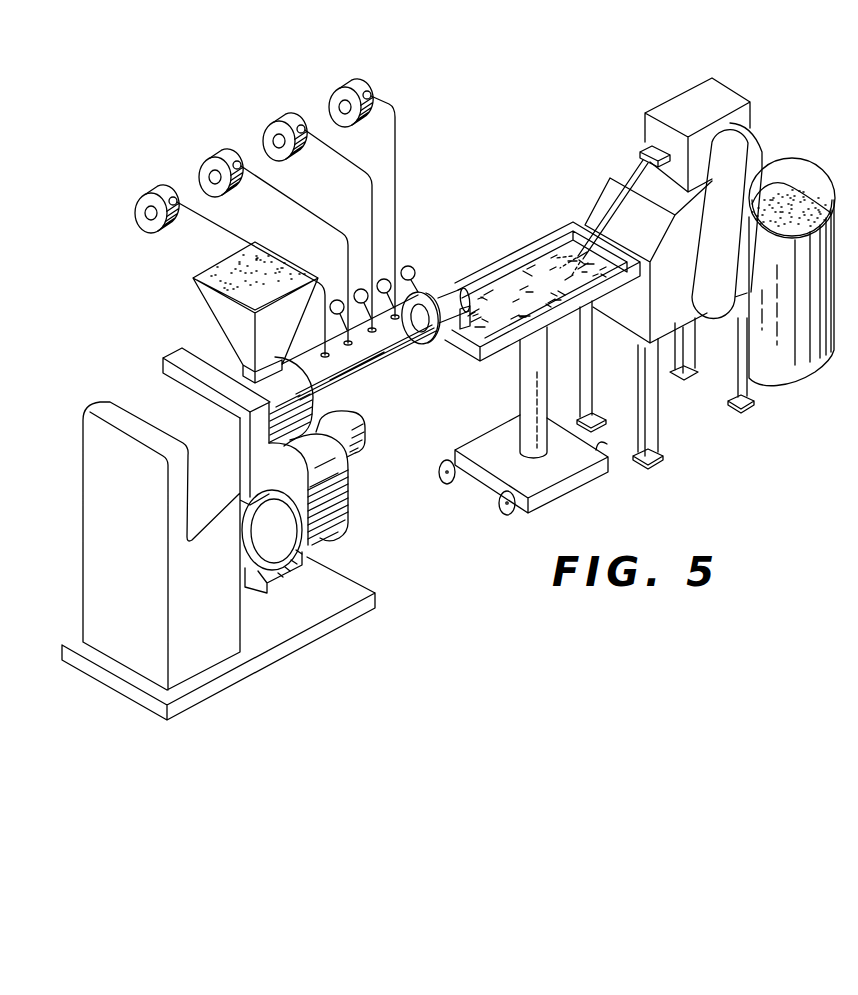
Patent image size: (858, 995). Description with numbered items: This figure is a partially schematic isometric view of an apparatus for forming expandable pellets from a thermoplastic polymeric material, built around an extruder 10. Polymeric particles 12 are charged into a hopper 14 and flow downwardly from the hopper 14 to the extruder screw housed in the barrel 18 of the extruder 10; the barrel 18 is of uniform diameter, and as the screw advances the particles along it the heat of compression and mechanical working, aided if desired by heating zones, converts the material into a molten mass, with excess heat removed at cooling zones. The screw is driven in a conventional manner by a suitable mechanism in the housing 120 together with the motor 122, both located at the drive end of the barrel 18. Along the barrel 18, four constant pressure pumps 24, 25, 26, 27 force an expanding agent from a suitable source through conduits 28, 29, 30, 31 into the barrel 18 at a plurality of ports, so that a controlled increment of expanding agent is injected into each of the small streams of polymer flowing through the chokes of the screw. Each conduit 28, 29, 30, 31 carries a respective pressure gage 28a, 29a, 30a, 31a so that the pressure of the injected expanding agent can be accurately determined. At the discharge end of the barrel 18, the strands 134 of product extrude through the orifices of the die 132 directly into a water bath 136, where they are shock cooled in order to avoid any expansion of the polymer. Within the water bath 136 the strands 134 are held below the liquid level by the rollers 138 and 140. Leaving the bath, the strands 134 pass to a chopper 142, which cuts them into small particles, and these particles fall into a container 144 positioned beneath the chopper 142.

The extruder 10 is at (236, 368).
The polymeric particles 12 is at (238, 271).
The hopper 14 is at (217, 307).
The barrel 18 is at (387, 358).
The constant pressure pump 24 is at (340, 98).
The constant pressure pump 25 is at (266, 136).
The constant pressure pump 26 is at (203, 168).
The constant pressure pump 27 is at (138, 212).
The conduit 28 is at (398, 162).
The conduit 29 is at (372, 203).
The conduit 30 is at (348, 243).
The conduit 31 is at (325, 300).
The pressure gage 28a is at (416, 273).
The pressure gage 29a is at (389, 280).
The pressure gage 30a is at (366, 290).
The pressure gage 31a is at (337, 300).
The housing 120 is at (208, 615).
The motor 122 is at (353, 421).
The die 132 is at (458, 318).
The strands 134 is at (602, 196).
The water bath 136 is at (520, 275).
The roller 138 is at (486, 290).
The roller 140 is at (547, 237).
The chopper 142 is at (675, 108).
The container 144 is at (770, 372).